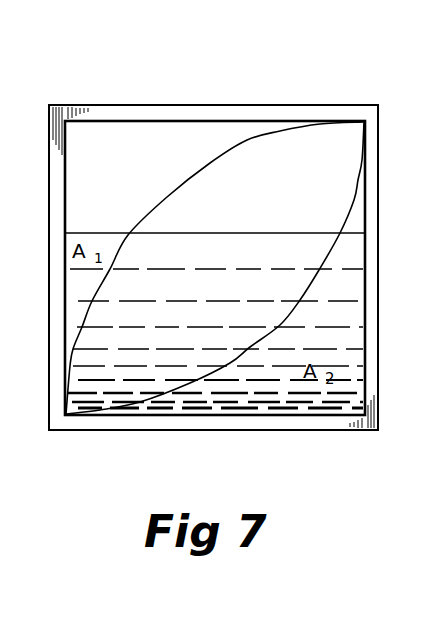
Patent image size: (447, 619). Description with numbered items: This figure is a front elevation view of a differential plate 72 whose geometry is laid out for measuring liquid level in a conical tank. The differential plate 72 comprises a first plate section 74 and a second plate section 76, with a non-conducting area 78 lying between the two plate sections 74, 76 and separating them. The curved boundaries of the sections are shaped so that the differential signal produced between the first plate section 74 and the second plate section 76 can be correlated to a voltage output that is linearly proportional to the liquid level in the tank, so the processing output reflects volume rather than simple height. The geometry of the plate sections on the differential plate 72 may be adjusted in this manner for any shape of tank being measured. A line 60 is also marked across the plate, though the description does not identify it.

The differential plate 72 is at (92, 103).
The first plate section 74 is at (132, 173).
The boundary line 60 is at (105, 232).
The non-conducting area 78 is at (246, 217).
The second plate section 76 is at (343, 325).